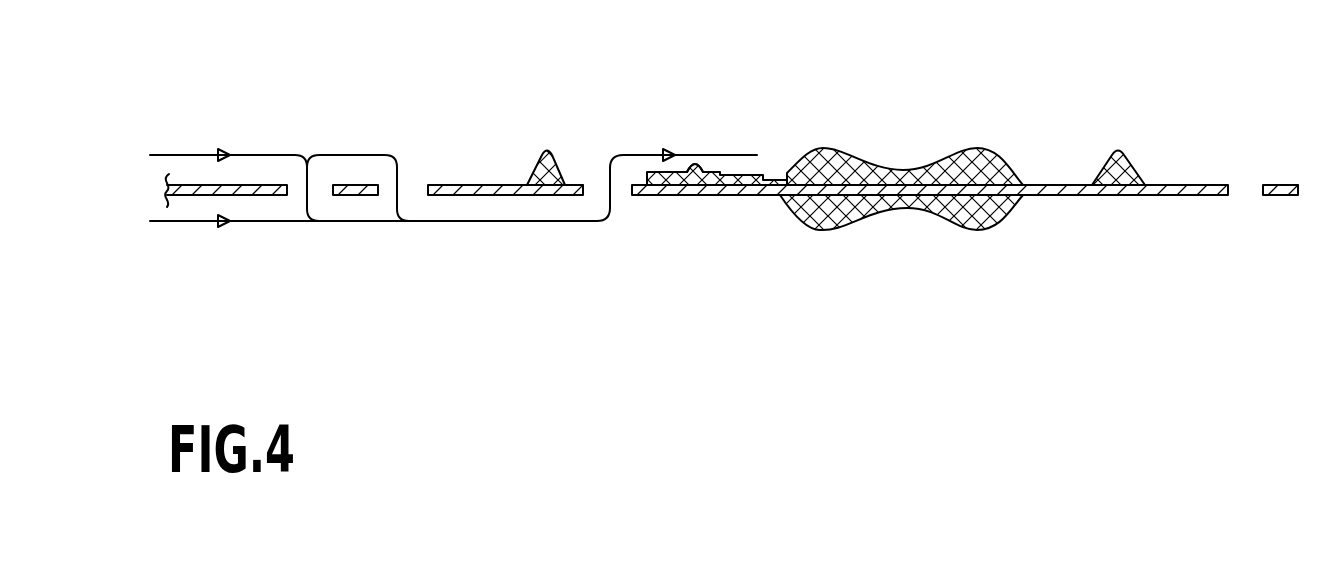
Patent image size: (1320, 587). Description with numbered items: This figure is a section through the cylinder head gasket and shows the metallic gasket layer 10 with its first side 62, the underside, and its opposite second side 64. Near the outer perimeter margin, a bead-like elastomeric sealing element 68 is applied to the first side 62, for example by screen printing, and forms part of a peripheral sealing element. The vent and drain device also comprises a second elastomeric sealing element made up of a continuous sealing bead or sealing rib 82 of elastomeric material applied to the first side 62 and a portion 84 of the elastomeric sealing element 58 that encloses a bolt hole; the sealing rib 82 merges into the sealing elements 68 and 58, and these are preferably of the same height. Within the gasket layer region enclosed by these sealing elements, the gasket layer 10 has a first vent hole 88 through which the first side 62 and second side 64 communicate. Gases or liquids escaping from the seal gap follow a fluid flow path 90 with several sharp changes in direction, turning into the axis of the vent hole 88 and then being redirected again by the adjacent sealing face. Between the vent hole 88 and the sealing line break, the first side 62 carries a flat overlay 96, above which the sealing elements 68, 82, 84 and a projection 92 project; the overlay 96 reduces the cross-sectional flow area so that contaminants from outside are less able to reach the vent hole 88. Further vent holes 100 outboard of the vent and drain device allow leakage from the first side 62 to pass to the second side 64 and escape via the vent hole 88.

The metallic gasket layer 10 is at (1183, 180).
The elastomeric sealing element 58 is at (988, 155).
The first side 62 is at (480, 185).
The second side 64 is at (540, 195).
The elastomeric sealing element 68 is at (1118, 160).
The sealing bead or sealing rib 82 is at (547, 160).
The portion of the elastomeric sealing element 84 is at (815, 153).
The first vent hole 88 is at (599, 190).
The fluid flow path 90 is at (483, 221).
The projection 92 is at (697, 158).
The flat overlay 96 is at (660, 183).
The further vent holes 100 is at (298, 190).